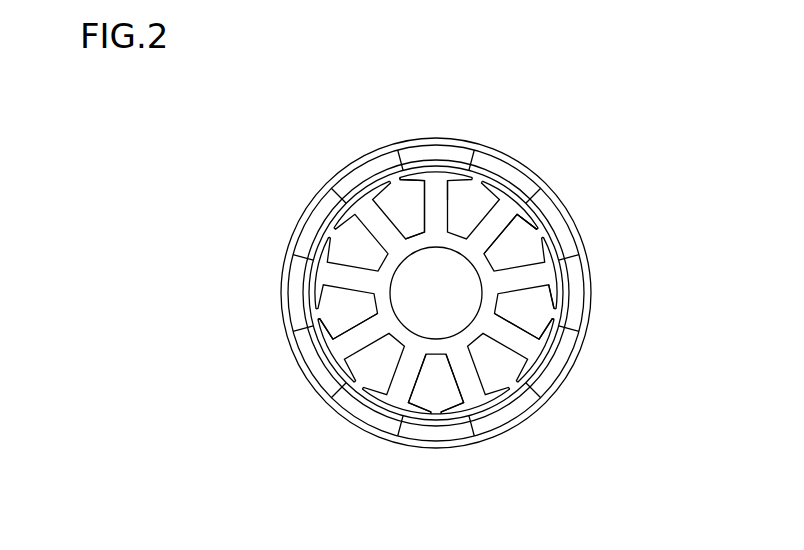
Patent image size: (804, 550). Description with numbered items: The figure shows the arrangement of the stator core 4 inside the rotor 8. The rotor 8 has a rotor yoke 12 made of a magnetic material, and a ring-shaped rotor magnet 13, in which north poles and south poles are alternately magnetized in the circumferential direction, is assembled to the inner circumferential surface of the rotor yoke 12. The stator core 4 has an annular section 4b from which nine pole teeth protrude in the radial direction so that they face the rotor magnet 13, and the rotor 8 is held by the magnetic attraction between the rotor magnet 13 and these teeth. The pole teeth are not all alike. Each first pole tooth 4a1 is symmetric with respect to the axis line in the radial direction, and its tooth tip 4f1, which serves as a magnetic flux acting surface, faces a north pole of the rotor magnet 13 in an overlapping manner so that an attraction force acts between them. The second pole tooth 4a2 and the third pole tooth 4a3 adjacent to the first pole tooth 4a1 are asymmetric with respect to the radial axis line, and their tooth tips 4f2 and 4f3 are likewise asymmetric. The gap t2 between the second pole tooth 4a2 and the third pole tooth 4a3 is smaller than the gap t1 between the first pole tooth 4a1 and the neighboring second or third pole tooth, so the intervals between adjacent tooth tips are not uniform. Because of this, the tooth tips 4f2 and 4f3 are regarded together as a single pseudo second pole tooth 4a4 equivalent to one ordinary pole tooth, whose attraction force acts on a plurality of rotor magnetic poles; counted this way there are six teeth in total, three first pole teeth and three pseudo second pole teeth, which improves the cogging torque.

The stator core 4 is at (430, 315).
The first pole tooth 4a1 is at (433, 192).
The second pole tooth 4a2 is at (506, 208).
The third pole tooth 4a3 is at (408, 220).
The pseudo second pole tooth 4a4 is at (553, 490).
The annular section 4b is at (382, 301).
The tooth tip 4f1 is at (451, 178).
The tooth tip 4f2 is at (534, 206).
The tooth tip 4f3 is at (576, 289).
The rotor 8 is at (293, 228).
The rotor yoke 12 is at (592, 306).
The rotor magnet 13 is at (586, 336).
The gap t1 is at (538, 393).
The gap t2 is at (438, 418).